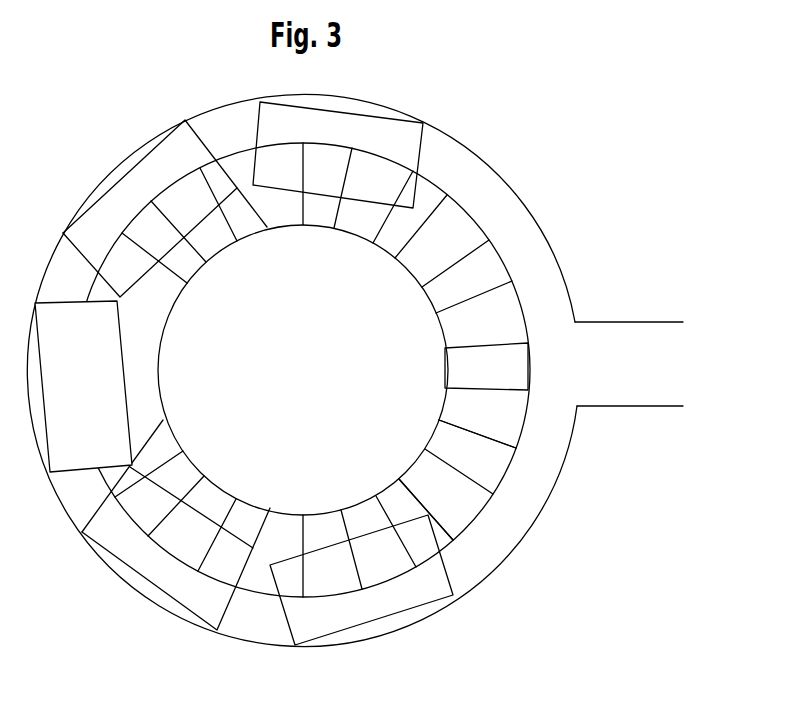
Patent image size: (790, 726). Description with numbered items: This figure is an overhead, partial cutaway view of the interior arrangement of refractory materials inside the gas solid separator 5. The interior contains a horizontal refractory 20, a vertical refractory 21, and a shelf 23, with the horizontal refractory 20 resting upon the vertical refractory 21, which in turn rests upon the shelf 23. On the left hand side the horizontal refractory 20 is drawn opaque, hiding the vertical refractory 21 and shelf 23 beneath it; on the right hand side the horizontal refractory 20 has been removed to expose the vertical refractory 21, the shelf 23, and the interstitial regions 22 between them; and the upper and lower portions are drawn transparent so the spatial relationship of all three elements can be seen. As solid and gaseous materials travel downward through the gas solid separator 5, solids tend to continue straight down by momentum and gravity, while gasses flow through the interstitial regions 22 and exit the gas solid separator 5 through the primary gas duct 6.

The gas solid separator 5 is at (220, 398).
The primary gas duct 6 is at (629, 364).
The horizontal refractory 20 is at (75, 400).
The vertical refractory 21 is at (469, 295).
The interstitial regions 22 is at (458, 412).
The shelf 23 is at (489, 427).